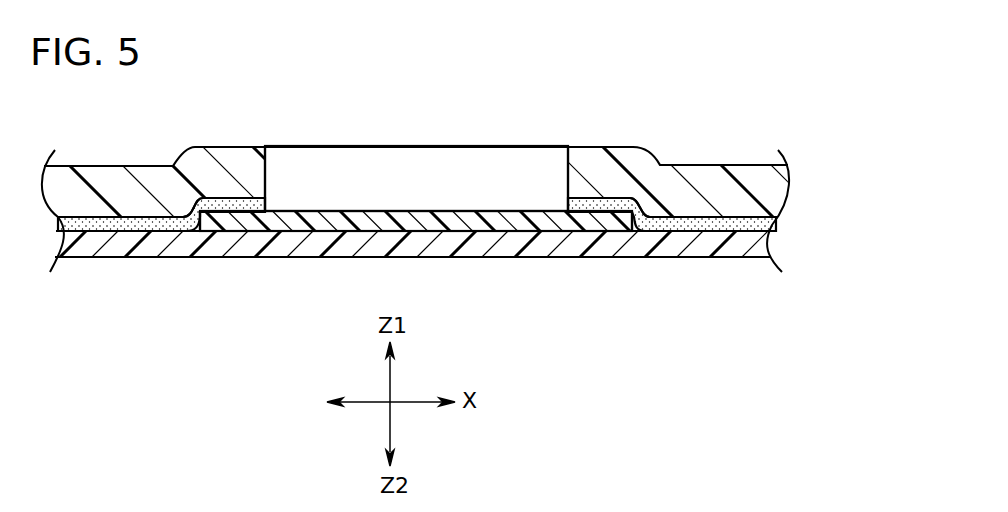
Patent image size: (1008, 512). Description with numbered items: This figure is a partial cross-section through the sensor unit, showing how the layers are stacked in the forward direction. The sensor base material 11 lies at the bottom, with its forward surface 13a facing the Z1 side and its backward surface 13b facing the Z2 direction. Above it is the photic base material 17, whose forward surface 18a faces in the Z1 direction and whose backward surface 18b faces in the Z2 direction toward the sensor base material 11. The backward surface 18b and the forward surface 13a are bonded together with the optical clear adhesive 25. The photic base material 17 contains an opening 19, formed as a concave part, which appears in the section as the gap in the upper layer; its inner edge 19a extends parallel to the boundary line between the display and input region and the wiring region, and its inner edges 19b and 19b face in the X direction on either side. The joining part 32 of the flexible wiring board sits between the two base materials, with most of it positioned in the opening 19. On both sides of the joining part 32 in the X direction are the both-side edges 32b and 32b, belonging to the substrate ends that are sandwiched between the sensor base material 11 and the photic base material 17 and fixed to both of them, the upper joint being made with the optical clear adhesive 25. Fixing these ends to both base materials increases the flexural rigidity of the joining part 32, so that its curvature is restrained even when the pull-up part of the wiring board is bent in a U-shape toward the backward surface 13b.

The sensor base material 11 is at (343, 233).
The forward surface 13a is at (683, 230).
The backward surface 13b is at (563, 252).
The photic base material 17 is at (793, 193).
The forward surface 18a is at (148, 166).
The backward surface 18b is at (105, 233).
The opening 19 is at (368, 162).
The inner edge 19a is at (460, 162).
The inner edges 19b is at (268, 180).
The optical clear adhesive 25 is at (747, 233).
The joining part 32 is at (487, 213).
The both-side edges 32b is at (195, 232).